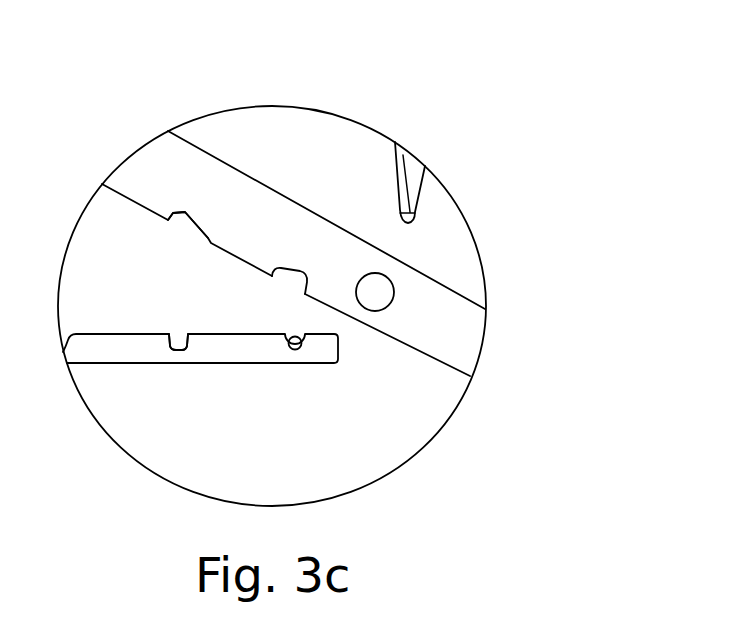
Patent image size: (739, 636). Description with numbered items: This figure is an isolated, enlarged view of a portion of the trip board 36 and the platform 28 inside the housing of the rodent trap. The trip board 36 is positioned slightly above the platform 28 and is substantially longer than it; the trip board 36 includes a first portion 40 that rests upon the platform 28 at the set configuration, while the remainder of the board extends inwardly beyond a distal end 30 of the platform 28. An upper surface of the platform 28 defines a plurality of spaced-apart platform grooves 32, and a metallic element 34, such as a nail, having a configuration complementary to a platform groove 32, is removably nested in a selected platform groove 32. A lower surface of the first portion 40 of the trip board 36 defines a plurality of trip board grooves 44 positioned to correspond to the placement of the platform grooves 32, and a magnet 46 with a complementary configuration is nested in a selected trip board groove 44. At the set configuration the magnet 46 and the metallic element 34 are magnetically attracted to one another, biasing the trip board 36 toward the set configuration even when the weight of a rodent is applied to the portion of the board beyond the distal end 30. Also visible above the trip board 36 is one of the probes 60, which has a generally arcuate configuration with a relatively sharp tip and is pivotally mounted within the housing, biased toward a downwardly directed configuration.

The platform 28 is at (218, 350).
The distal end 30 is at (338, 353).
The platform groove 32 is at (175, 350).
The metallic element 34 is at (296, 349).
The trip board 36 is at (307, 140).
The first portion 40 is at (152, 167).
The trip board groove 44 is at (190, 217).
The magnet 46 is at (288, 268).
The probe 60 is at (410, 187).